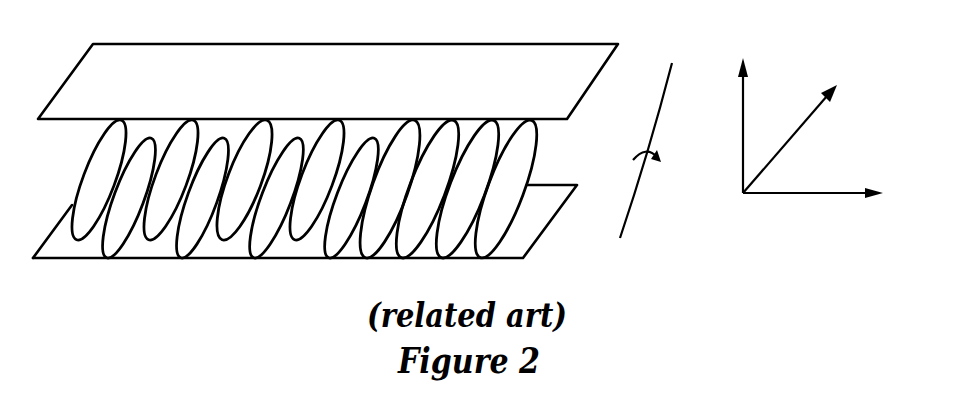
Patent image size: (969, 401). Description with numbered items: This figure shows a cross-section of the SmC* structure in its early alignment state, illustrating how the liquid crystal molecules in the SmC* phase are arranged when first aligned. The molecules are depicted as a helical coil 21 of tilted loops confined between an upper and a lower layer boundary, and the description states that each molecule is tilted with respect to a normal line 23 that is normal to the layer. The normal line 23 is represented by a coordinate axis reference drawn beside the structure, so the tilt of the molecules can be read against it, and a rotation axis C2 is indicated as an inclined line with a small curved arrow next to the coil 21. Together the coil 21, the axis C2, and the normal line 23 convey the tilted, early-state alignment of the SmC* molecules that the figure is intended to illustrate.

The coil spring (helical coil) 21 is at (535, 155).
The rotation axis C2 is at (639, 166).
The normal line 23 is at (745, 95).